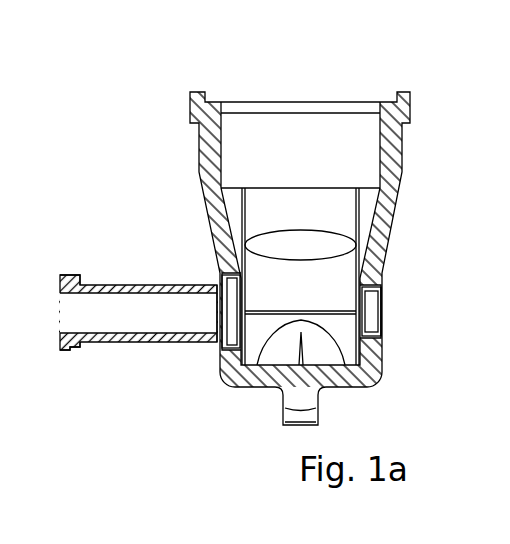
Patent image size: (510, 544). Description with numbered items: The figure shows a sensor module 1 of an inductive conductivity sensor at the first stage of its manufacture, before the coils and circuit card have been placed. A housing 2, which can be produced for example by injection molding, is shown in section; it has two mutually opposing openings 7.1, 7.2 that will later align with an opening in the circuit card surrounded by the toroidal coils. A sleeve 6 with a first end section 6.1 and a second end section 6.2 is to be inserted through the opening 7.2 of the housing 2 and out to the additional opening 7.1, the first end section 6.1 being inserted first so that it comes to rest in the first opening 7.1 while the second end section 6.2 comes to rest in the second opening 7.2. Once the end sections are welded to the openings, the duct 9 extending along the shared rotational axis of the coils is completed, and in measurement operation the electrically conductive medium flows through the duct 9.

The sensor module 1 is at (143, 92).
The housing 2 is at (198, 90).
The sleeve 6 is at (62, 353).
The first end section 6.1 is at (210, 350).
The second end section 6.2 is at (74, 273).
The first opening 7.1 is at (390, 288).
The second opening 7.2 is at (216, 277).
The duct 9 is at (390, 320).